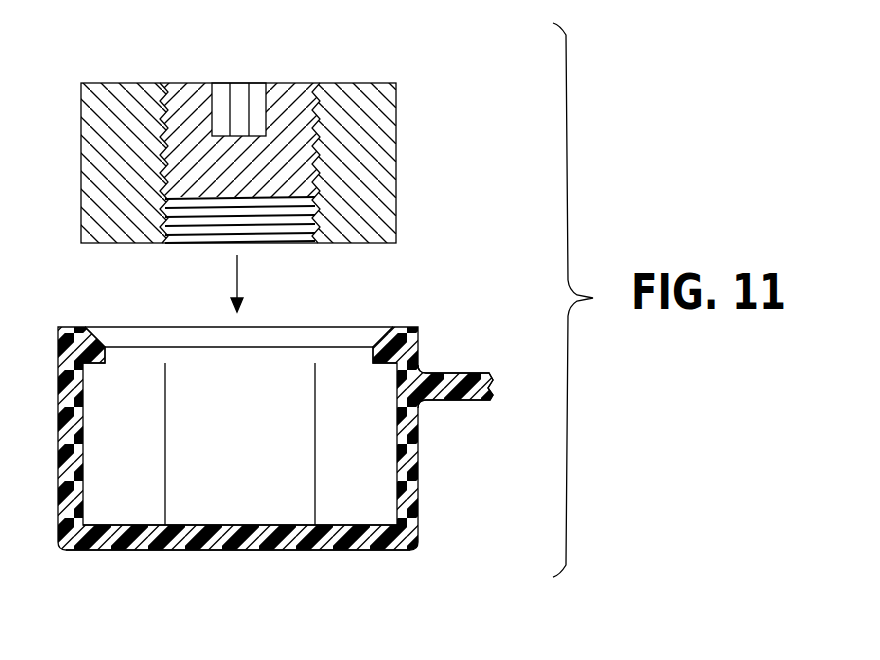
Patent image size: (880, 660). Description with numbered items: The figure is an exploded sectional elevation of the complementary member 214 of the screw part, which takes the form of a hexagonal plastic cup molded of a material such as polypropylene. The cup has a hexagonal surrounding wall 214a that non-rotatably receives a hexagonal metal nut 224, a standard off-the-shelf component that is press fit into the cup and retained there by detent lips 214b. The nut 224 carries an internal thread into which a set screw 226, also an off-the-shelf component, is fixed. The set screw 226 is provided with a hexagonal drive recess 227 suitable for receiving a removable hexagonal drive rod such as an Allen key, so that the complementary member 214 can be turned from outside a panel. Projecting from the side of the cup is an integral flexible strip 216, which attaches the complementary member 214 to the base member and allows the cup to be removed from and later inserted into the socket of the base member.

The hexagonal metal nut 224 is at (259, 128).
The set screw 226 is at (189, 103).
The hexagonal drive recess 227 is at (240, 95).
The complementary member 214 is at (273, 441).
The hexagonal surrounding wall 214a is at (58, 508).
The detent lips 214b is at (385, 366).
The integral flexible strip 216 is at (450, 401).